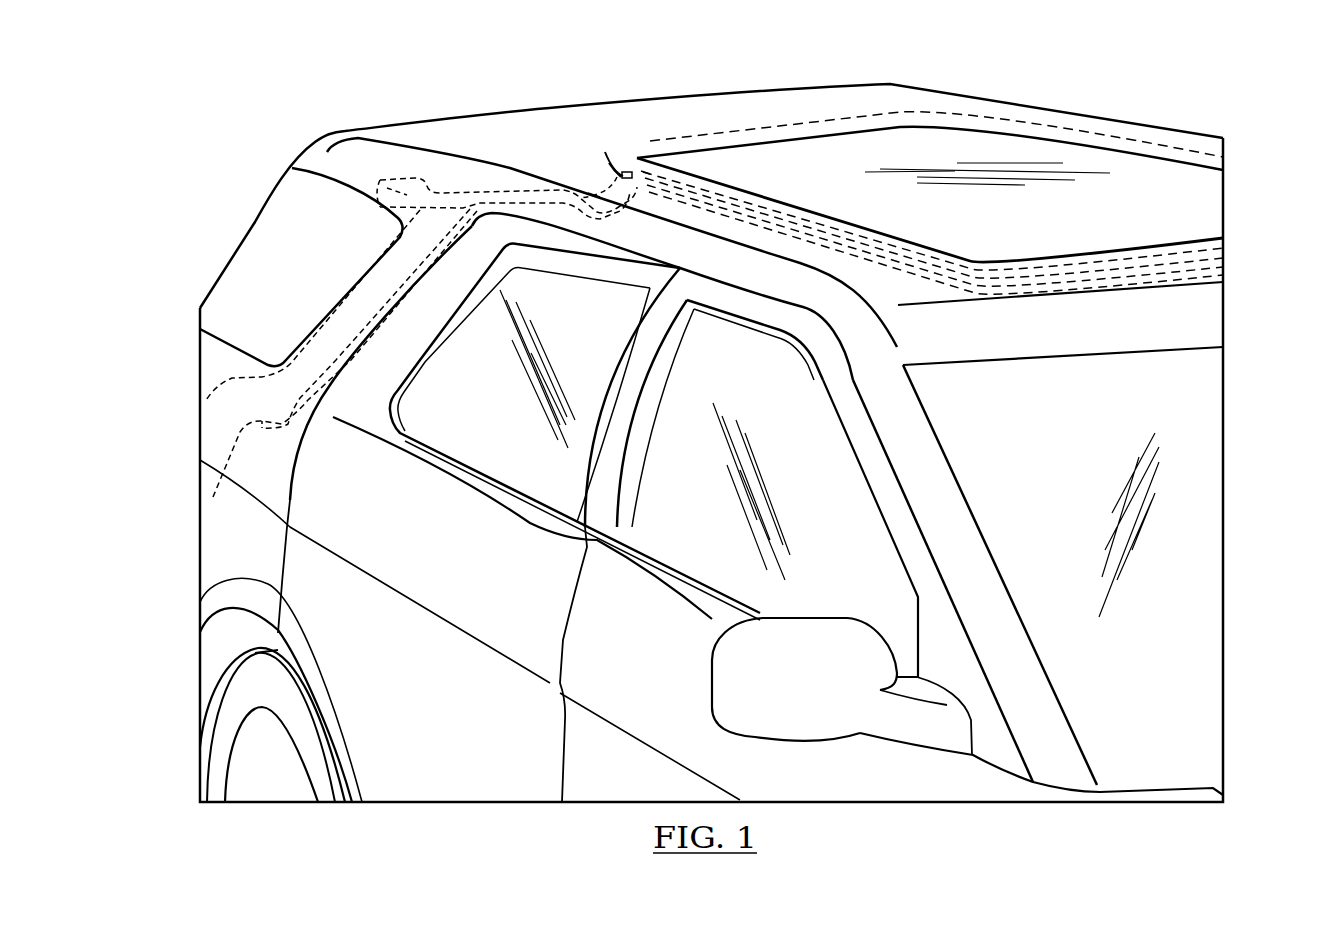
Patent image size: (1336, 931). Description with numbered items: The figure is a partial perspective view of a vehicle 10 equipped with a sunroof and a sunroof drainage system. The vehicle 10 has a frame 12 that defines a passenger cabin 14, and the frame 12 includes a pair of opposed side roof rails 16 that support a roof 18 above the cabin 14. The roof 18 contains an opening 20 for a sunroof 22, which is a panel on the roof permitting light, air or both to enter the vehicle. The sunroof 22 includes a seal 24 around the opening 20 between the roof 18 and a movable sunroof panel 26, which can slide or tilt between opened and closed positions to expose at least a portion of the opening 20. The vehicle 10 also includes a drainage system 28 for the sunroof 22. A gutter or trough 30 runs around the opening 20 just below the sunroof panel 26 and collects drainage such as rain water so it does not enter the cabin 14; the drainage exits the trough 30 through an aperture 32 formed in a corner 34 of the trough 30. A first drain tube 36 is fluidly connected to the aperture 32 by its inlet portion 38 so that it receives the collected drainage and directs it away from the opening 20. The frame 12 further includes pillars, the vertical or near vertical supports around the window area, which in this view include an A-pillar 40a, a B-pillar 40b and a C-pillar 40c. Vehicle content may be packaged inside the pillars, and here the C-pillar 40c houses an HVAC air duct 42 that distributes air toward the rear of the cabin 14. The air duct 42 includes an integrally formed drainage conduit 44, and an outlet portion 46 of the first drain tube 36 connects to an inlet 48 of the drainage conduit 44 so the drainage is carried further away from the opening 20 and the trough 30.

The vehicle 10 is at (1236, 96).
The frame 12 is at (1013, 653).
The passenger cabin 14 is at (837, 478).
The side roof rails 16 is at (1207, 143).
The roof 18 is at (752, 100).
The opening 20 is at (1168, 250).
The sunroof 22 is at (958, 153).
The seal 24 is at (1061, 259).
The sunroof panel 26 is at (983, 150).
The drainage system 28 is at (601, 152).
The trough 30 is at (773, 207).
The aperture 32 is at (620, 157).
The corner 34 is at (625, 152).
The first drain tube 36 is at (593, 198).
The inlet portion 38 is at (643, 182).
The A-pillar 40a is at (953, 517).
The B-pillar 40b is at (640, 352).
The C-pillar 40c is at (317, 320).
The air duct 42 is at (357, 300).
The drainage conduit 44 is at (386, 323).
The outlet portion 46 is at (483, 192).
The inlet 48 is at (485, 206).